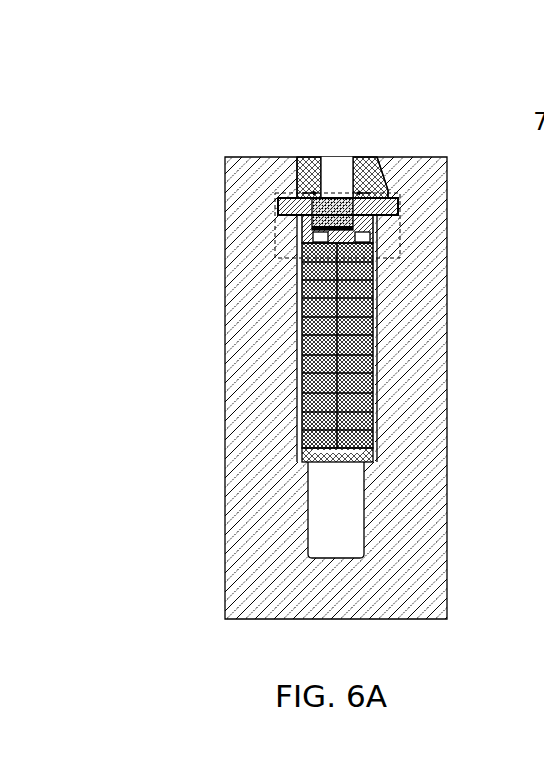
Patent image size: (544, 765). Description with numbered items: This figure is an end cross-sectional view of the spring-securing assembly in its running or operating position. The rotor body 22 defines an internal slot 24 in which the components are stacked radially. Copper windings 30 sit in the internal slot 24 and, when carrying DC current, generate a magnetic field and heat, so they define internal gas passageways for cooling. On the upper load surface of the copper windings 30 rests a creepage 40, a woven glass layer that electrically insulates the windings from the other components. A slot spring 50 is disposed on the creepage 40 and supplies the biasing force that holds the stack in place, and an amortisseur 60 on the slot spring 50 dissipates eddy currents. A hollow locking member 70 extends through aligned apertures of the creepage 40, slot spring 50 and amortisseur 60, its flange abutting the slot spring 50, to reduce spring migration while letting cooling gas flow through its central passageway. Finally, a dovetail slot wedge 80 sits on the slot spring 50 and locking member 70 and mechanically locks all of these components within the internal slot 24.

The rotor body 22 is at (248, 393).
The internal slot 24 is at (323, 500).
The copper windings 30 is at (318, 323).
The creepage 40 is at (310, 233).
The slot spring 50 is at (287, 215).
The amortisseur 60 is at (297, 208).
The hollow locking member 70 is at (345, 228).
The slot wedge 80 is at (308, 160).